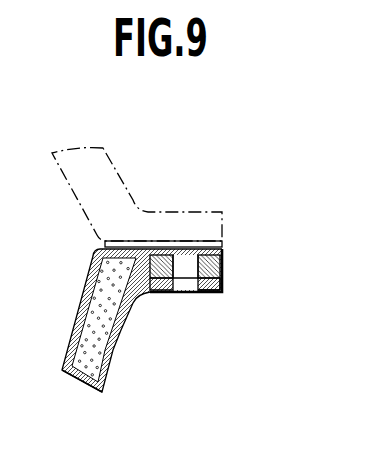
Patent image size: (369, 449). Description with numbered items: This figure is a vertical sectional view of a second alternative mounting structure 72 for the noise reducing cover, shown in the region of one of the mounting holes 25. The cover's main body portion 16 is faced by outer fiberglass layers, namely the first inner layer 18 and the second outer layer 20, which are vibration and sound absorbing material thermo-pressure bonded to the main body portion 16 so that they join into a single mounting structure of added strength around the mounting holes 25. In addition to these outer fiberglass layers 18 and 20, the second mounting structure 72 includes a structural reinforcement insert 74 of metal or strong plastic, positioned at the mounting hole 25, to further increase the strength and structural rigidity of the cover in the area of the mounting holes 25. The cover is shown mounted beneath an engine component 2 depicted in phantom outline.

The seat 2 is at (222, 237).
The main body portion 16 is at (83, 376).
The first inner layer 18 is at (86, 298).
The second outer layer 20 is at (120, 332).
The mounting holes 25 is at (189, 291).
The second alternative mounting structure 72 is at (228, 268).
The structural reinforcement insert 74 is at (222, 278).